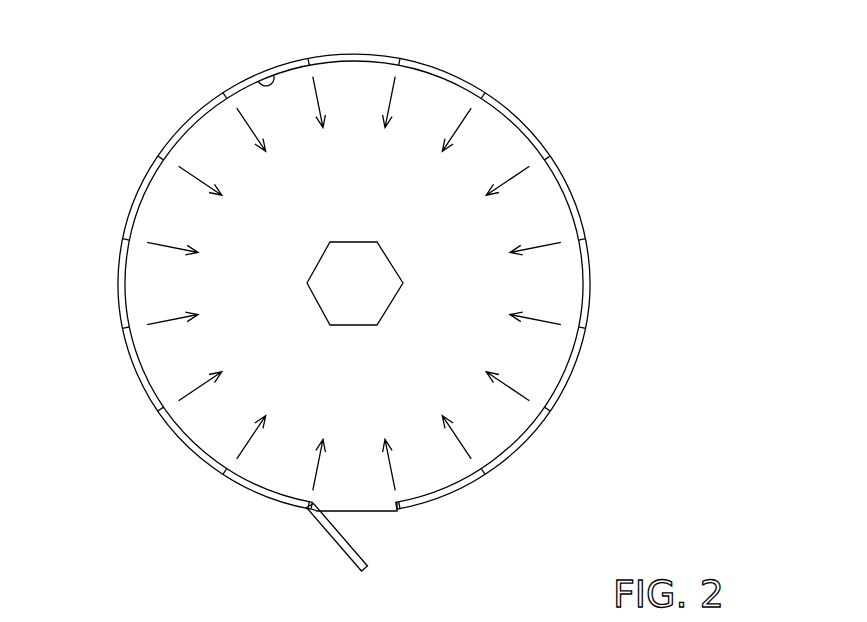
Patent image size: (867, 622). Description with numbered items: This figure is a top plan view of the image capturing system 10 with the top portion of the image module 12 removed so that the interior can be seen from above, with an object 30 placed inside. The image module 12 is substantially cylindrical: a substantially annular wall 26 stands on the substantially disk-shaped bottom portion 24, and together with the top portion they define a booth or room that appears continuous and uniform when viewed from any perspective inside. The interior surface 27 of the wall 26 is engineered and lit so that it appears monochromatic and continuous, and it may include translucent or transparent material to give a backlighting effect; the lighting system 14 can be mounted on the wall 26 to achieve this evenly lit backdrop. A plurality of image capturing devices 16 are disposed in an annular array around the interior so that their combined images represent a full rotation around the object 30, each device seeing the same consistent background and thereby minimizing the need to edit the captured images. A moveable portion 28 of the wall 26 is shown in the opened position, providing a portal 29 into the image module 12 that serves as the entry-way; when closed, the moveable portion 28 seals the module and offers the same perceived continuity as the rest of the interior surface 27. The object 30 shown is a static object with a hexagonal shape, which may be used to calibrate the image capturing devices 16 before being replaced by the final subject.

The image capturing system 10 is at (369, 323).
The image module 12 is at (578, 201).
The lighting system 14 is at (168, 617).
The image capturing devices 16 is at (584, 327).
The bottom portion 24 is at (337, 202).
The wall 26 is at (118, 300).
The interior surface 27 is at (263, 82).
The moveable portion 28 is at (338, 546).
The portal 29 is at (357, 512).
The object 30 is at (352, 325).